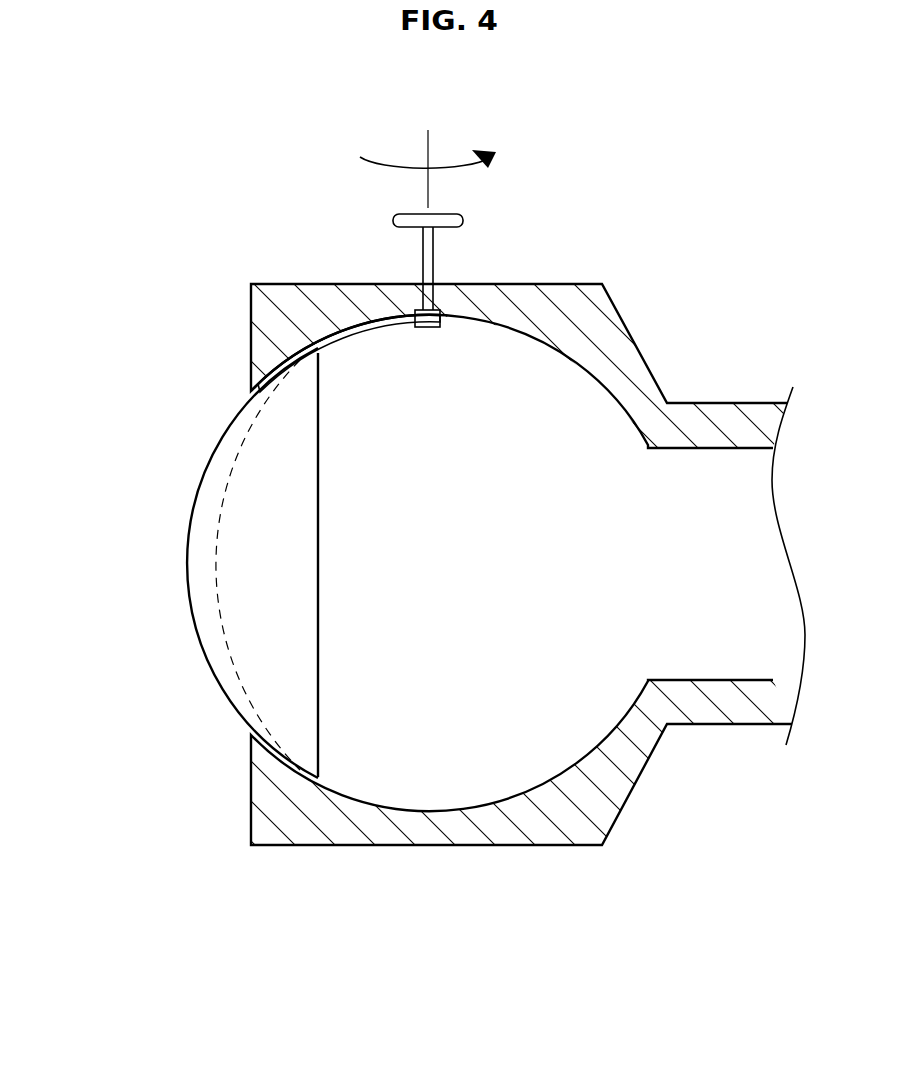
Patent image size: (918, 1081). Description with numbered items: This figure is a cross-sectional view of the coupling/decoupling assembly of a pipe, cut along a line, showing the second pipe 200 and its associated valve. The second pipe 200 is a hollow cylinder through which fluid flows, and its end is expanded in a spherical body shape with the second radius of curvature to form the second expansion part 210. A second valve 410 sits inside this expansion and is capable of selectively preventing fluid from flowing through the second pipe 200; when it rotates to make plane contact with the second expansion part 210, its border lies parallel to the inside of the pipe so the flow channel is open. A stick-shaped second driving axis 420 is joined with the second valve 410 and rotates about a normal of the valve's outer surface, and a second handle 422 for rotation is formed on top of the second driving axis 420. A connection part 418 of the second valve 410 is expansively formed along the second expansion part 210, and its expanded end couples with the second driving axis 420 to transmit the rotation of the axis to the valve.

The second pipe 200 is at (630, 252).
The second expansion part 210 is at (300, 350).
The second valve 410 is at (168, 640).
The connection part 418 is at (362, 342).
The second driving axis 420 is at (470, 250).
The second handle 422 is at (403, 219).